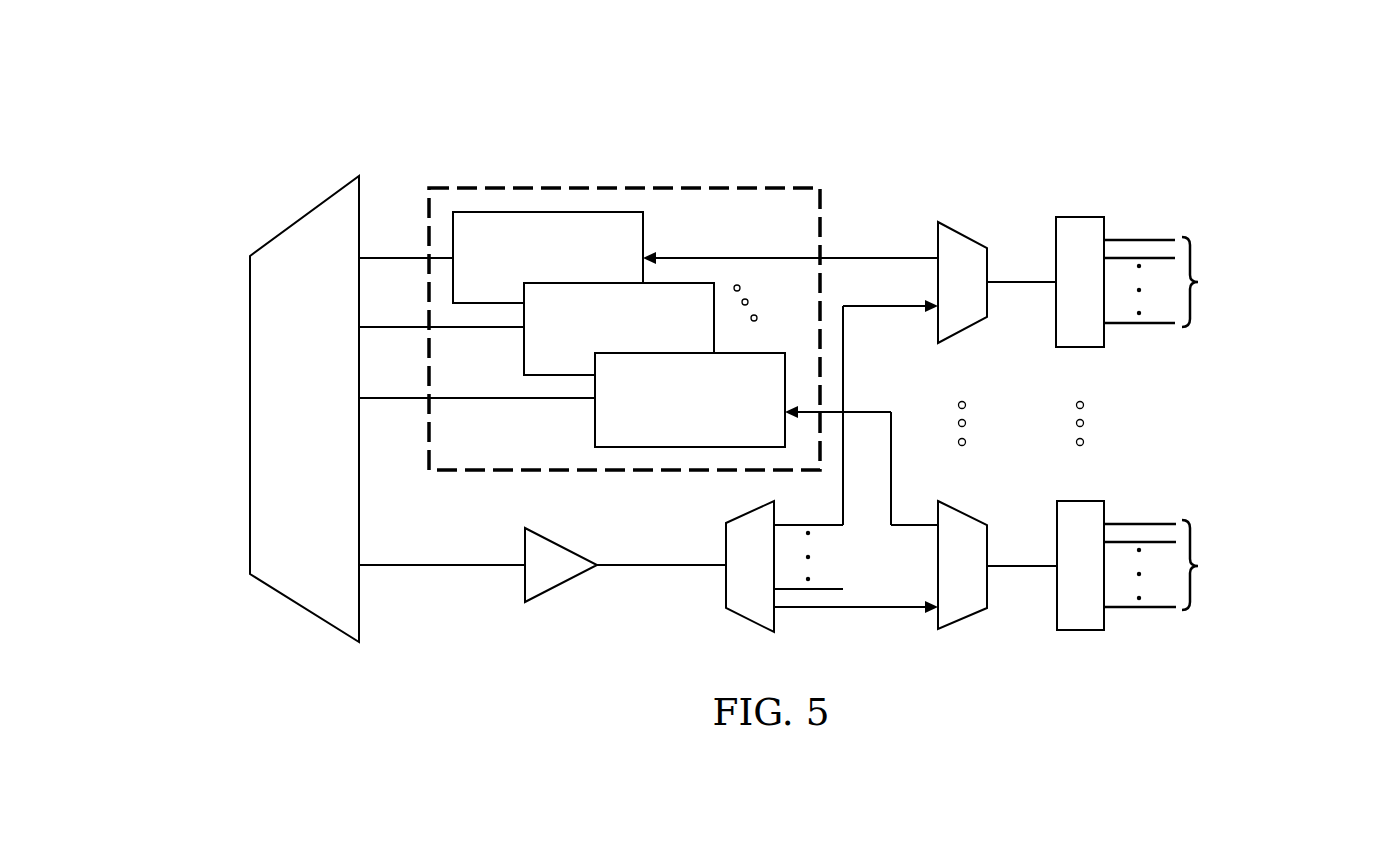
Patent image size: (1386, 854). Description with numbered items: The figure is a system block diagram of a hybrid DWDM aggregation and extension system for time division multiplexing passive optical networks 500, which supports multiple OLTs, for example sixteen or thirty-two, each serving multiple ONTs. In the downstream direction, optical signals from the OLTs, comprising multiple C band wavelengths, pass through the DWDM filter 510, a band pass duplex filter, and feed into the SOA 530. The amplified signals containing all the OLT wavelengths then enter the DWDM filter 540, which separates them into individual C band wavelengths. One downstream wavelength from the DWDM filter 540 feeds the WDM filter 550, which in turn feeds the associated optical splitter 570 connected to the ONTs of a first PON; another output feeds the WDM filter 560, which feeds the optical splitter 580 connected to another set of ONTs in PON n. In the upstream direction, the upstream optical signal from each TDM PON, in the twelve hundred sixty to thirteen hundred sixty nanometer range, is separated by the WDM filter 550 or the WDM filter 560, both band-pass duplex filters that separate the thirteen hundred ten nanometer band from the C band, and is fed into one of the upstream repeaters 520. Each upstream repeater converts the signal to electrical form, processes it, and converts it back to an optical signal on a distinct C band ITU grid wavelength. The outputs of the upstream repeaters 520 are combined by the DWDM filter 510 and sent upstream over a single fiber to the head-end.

The system of hybrid DWDM aggregation and extension for time division multiplexing p 500 is at (362, 88).
The DWDM filter 510 is at (304, 609).
The upstream repeaters 520 is at (607, 178).
The SOA 530 is at (562, 583).
The DWDM filter 540 is at (748, 622).
The WDM filter 550 is at (963, 232).
The WDM filter 560 is at (963, 620).
The optical splitter 570 is at (1080, 215).
The optical splitter 580 is at (1078, 632).